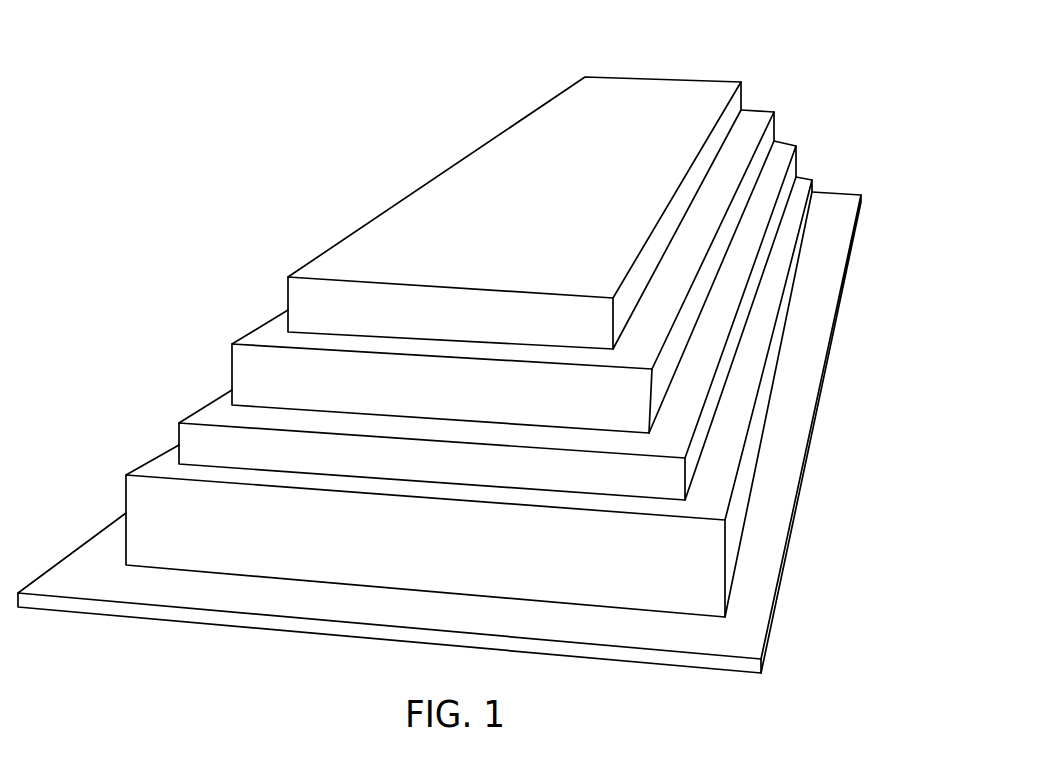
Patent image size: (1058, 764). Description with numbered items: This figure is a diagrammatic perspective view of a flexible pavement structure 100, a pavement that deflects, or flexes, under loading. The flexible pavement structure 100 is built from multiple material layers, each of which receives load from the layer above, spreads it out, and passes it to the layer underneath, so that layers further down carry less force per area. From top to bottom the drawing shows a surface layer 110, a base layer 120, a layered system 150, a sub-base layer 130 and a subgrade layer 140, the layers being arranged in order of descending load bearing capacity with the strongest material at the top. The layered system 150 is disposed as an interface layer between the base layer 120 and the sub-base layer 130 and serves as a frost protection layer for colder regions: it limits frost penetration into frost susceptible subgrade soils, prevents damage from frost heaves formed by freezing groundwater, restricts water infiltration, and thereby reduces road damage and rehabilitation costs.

The flexible pavement structure 100 is at (462, 336).
The surface layer 110 is at (288, 289).
The base layer 120 is at (232, 353).
The layered system 150 is at (179, 428).
The sub-base layer 130 is at (126, 490).
The subgrade layer 140 is at (813, 425).